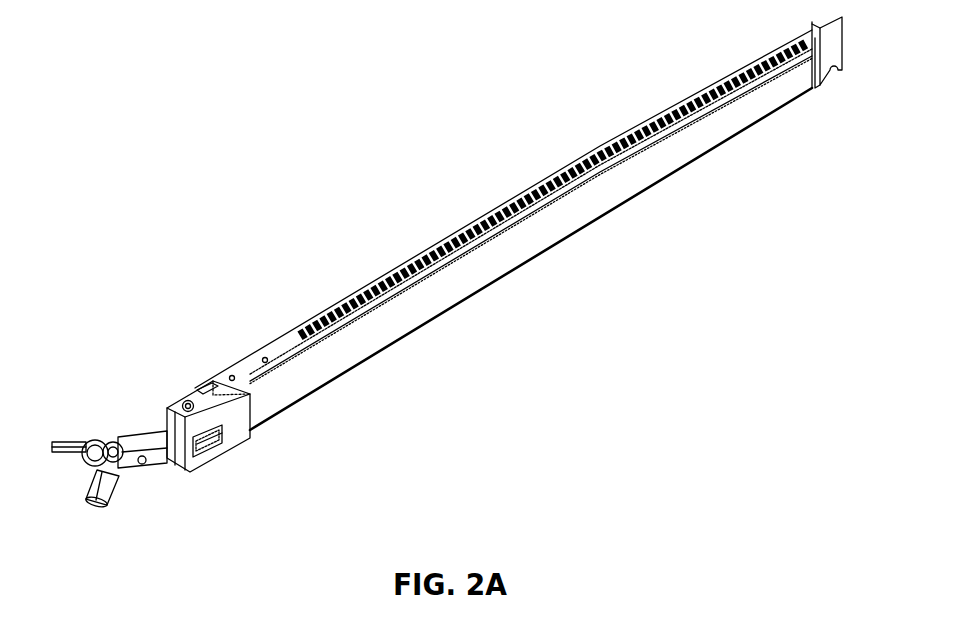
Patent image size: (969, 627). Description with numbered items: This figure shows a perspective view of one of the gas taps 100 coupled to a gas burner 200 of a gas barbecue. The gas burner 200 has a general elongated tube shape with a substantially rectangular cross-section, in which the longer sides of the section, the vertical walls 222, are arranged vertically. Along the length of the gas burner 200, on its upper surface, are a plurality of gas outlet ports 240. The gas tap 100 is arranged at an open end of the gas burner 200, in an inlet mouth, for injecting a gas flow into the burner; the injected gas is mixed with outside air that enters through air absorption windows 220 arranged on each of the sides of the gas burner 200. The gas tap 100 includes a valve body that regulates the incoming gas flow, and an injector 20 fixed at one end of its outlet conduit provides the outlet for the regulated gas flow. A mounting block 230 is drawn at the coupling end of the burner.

The gas tap 100 is at (105, 400).
The injector 20 is at (177, 400).
The gas burner 200 is at (498, 160).
The air absorption windows 220 is at (250, 432).
The vertical walls 222 is at (498, 265).
The mounting block 230 is at (233, 387).
The gas outlet ports 240 is at (421, 258).